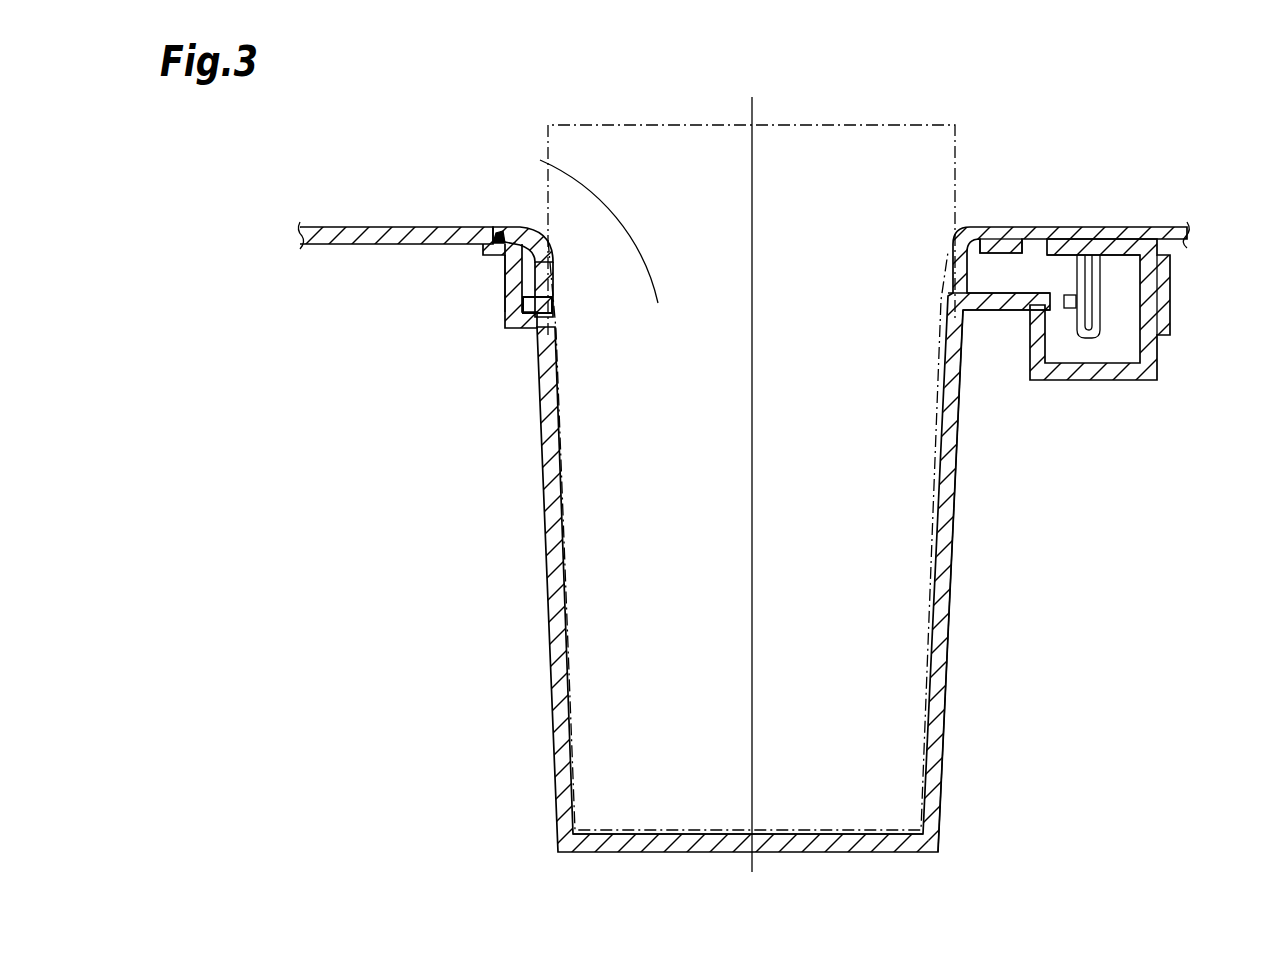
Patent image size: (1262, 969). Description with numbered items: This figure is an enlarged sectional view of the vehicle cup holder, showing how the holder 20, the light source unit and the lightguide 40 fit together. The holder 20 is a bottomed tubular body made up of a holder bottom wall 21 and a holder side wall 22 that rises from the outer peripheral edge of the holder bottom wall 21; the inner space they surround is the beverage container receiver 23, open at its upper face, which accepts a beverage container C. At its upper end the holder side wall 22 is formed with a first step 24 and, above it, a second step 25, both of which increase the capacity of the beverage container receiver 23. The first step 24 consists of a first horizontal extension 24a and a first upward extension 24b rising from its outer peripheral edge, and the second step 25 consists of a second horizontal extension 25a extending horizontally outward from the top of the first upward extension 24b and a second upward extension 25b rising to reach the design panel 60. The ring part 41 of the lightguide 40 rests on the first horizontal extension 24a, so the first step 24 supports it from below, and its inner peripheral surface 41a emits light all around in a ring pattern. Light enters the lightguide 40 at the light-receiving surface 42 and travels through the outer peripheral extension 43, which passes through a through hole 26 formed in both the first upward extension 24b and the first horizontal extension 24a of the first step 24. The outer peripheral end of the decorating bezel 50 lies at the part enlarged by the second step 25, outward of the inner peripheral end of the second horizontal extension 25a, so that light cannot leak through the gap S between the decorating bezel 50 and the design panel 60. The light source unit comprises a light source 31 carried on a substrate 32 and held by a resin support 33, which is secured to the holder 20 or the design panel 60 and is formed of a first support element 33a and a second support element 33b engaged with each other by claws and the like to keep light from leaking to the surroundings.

The holder 20 is at (935, 718).
The holder bottom wall 21 is at (858, 845).
The holder side wall 22 is at (940, 640).
The beverage container receiver 23 is at (540, 160).
The first step 24 is at (520, 398).
The first horizontal extension 24a is at (520, 320).
The first upward extension 24b is at (515, 298).
The second step 25 is at (378, 265).
The second horizontal extension 25a is at (493, 290).
The second upward extension 25b is at (483, 251).
The through hole 26 is at (983, 252).
The light source 31 is at (1073, 296).
The substrate 32 is at (1082, 270).
The support 33 is at (1230, 167).
The first support element 33a is at (1122, 245).
The second support element 33b is at (1147, 335).
The lightguide 40 is at (983, 312).
The ring part 41 is at (548, 270).
The inner peripheral surface 41a is at (553, 305).
The light-receiving surface 42 is at (1060, 297).
The outer peripheral extension 43 is at (1020, 308).
The decorating bezel 50 is at (528, 230).
The design panel 60 is at (375, 227).
The gap S is at (498, 233).
The beverage container C is at (955, 168).